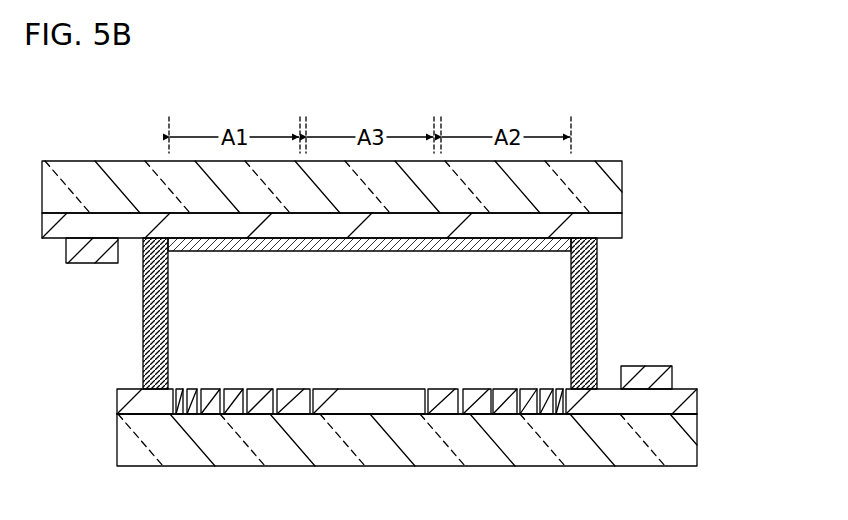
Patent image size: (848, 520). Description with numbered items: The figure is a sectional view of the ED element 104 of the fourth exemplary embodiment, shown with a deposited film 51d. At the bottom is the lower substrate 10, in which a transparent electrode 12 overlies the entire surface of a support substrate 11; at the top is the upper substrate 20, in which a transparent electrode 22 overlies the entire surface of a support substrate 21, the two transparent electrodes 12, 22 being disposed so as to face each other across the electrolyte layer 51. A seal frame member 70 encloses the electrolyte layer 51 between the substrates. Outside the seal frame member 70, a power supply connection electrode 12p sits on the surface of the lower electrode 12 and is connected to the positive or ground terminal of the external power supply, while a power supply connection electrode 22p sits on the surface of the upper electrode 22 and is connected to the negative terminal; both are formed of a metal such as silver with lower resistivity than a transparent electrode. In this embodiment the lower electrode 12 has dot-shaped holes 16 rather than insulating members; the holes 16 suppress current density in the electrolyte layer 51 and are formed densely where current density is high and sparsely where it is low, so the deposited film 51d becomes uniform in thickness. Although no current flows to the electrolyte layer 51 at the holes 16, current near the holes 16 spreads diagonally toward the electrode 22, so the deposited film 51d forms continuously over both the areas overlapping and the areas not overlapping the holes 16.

The lower substrate 10 is at (400, 410).
The support substrate 11 is at (443, 440).
The transparent electrode 12 is at (443, 397).
The power supply connection electrode 12p is at (689, 367).
The holes 16 is at (369, 386).
The upper substrate 20 is at (353, 208).
The support substrate 21 is at (369, 187).
The transparent electrode 22 is at (369, 220).
The power supply connection electrode 22p is at (64, 265).
The electrolyte layer 51 is at (520, 311).
The deposited film 51d is at (369, 269).
The seal frame member 70 is at (418, 313).
The ED element 104 is at (767, 489).